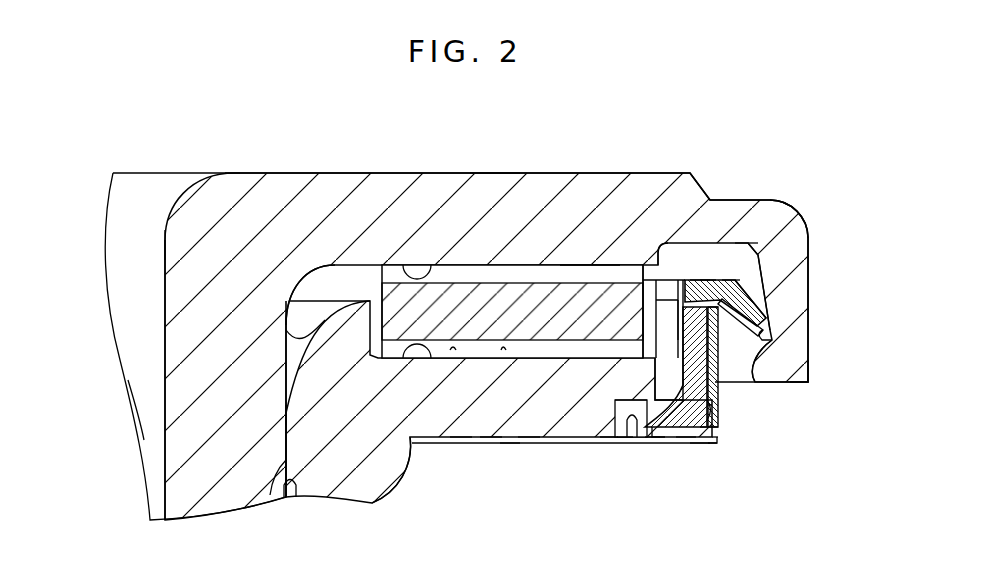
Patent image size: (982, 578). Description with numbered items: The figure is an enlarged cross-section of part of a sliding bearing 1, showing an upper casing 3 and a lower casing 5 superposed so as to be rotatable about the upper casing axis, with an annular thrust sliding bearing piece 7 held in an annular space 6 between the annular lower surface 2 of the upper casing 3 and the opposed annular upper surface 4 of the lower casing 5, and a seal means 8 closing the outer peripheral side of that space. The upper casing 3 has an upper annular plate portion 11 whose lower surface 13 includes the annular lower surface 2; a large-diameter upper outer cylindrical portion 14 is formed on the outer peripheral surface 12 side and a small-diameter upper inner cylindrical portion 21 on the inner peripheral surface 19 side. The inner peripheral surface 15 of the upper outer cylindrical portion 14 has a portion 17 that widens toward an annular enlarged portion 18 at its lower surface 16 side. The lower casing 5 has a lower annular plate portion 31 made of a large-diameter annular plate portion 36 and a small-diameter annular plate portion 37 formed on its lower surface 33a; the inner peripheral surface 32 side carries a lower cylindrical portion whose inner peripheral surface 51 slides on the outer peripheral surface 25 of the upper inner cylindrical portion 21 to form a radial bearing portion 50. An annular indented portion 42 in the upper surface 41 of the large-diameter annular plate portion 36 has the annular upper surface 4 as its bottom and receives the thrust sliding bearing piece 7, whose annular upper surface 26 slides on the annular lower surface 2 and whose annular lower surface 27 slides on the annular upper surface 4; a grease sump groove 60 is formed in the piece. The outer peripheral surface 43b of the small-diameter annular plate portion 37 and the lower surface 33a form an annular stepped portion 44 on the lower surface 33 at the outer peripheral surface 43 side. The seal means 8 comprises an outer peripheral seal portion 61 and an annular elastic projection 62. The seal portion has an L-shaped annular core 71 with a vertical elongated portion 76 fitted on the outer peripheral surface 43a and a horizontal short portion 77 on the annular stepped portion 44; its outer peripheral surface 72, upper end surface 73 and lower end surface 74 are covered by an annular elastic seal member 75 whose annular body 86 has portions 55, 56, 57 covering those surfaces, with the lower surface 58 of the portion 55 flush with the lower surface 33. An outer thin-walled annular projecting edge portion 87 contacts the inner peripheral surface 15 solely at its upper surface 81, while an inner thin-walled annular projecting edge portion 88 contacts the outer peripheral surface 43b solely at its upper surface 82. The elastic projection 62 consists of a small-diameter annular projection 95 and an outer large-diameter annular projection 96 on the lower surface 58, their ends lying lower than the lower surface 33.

The sliding bearing 1 is at (226, 150).
The annular lower surface 2 is at (478, 266).
The upper casing 3 is at (339, 184).
The annular upper surface 4 is at (503, 350).
The lower casing 5 is at (384, 462).
The annular space 6 is at (645, 274).
The thrust sliding bearing piece 7 is at (421, 268).
The seal means 8 is at (718, 440).
The upper annular plate portion 11 is at (490, 184).
The outer peripheral surface 12 is at (800, 207).
The lower surface 13 is at (731, 282).
The upper outer cylindrical portion 14 is at (712, 330).
The inner peripheral surface 15 is at (762, 252).
The lower surface 16 is at (810, 378).
The portion 17 is at (762, 333).
The annular enlarged portion 18 is at (765, 365).
The inner peripheral surface 19 is at (163, 243).
The upper inner cylindrical portion 21 is at (143, 402).
The outer peripheral surface 25 is at (290, 442).
The annular upper surface 26 is at (580, 265).
The annular lower surface 27 is at (495, 375).
The lower annular plate portion 31 is at (461, 440).
The inner peripheral surface 32 is at (287, 378).
The lower surface 33 is at (492, 440).
The lower surface 33a is at (664, 405).
The large-diameter annular plate portion 36 is at (529, 440).
The small-diameter annular plate portion 37 is at (510, 446).
The upper surface 41 is at (333, 277).
The annular indented portion 42 is at (452, 350).
The outer peripheral surface 43 is at (716, 385).
The outer peripheral surface 43a is at (716, 405).
The outer peripheral surface 43b is at (610, 441).
The annular stepped portion 44 is at (600, 430).
The radial bearing portion 50 is at (298, 488).
The inner peripheral surface 51 is at (277, 462).
The portion 55 is at (770, 344).
The portion 56 is at (708, 276).
The portion 57 is at (630, 440).
The lower surface 58 is at (700, 446).
The grease sump groove 60 is at (527, 275).
The outer peripheral seal portion 61 is at (750, 241).
The annular elastic projection 62 is at (686, 442).
The annular core 71 is at (660, 252).
The outer peripheral surface 72 is at (748, 375).
The upper end surface 73 is at (718, 305).
The lower end surface 74 is at (625, 442).
The annular elastic seal member 75 is at (700, 305).
The elongated portion 76 is at (674, 320).
The short portion 77 is at (659, 440).
The upper surface 81 is at (760, 300).
The upper surface 82 is at (630, 398).
The annular body 86 is at (720, 428).
The outer thin-walled annular projecting edge portion 87 is at (747, 283).
The inner thin-walled annular projecting edge portion 88 is at (614, 410).
The small-diameter annular projection 95 is at (651, 442).
The large-diameter annular projection 96 is at (714, 444).